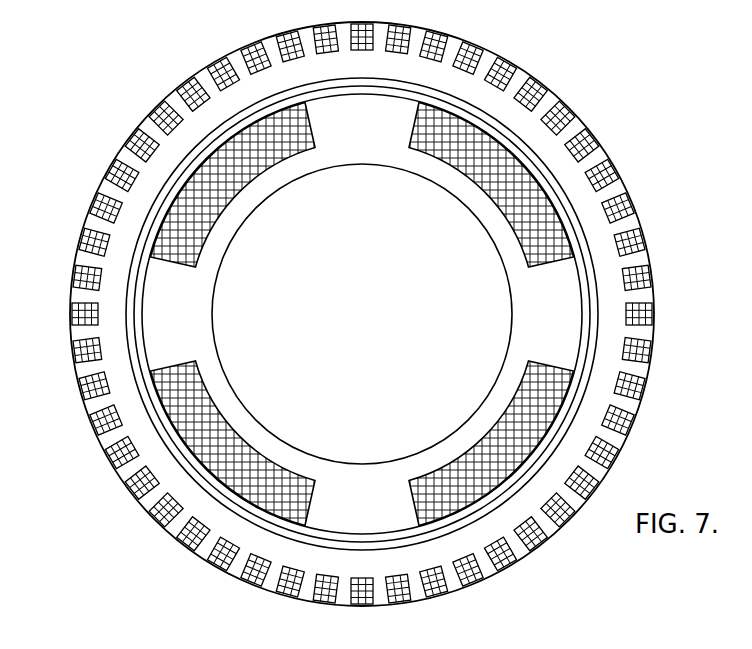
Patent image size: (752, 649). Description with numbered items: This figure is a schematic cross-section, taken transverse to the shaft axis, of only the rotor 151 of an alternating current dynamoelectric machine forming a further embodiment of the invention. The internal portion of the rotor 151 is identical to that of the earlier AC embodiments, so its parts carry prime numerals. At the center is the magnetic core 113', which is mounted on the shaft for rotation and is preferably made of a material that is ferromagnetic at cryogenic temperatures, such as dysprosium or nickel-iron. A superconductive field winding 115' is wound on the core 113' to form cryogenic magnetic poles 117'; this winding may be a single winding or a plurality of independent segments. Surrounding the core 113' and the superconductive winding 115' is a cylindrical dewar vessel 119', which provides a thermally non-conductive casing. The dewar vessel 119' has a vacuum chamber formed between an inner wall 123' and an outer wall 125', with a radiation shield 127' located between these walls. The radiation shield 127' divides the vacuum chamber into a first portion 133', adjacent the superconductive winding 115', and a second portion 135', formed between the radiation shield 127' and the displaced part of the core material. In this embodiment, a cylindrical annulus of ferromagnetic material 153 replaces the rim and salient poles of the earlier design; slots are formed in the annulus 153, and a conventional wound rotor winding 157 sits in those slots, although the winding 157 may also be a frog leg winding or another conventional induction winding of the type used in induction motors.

The rotor 151 is at (93, 174).
The cylindrical annulus of ferromagnetic material 153 is at (178, 140).
The wound rotor winding 157 is at (362, 314).
The dewar vessel 119' is at (370, 314).
The inner wall 123' is at (422, 314).
The radiation shield 127' is at (421, 314).
The outer wall 125' is at (417, 314).
The magnetic core 113' is at (362, 314).
The cryogenic magnetic poles 117' is at (233, 212).
The second portion of vacuum chamber 135' is at (542, 185).
The first portion of vacuum chamber 133' is at (553, 443).
The superconductive field winding 115' is at (239, 443).